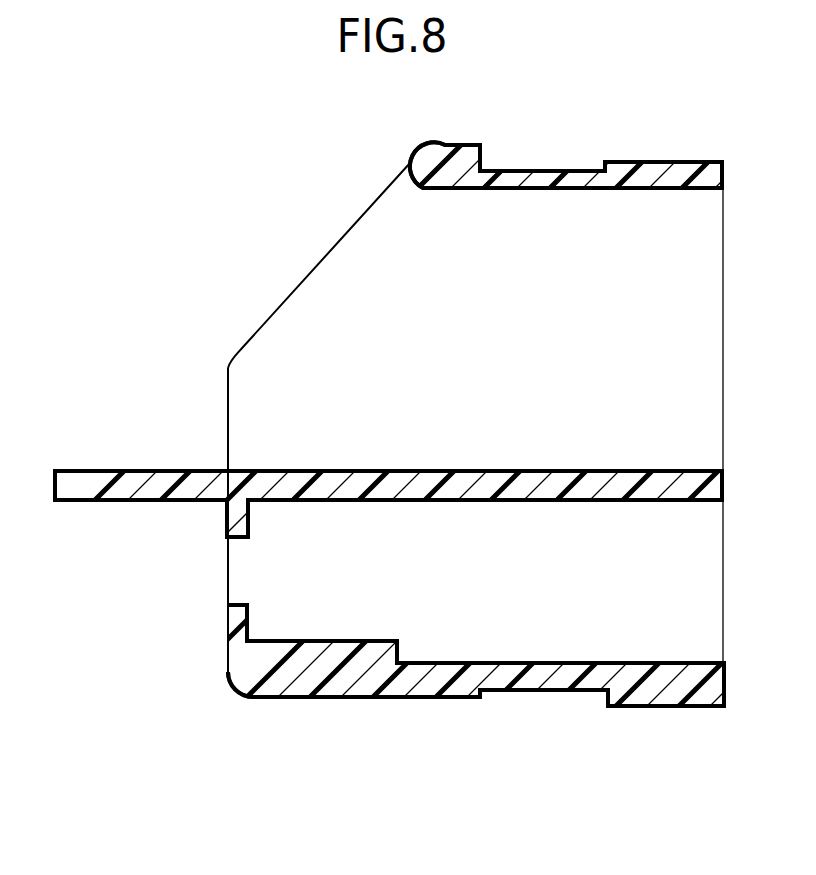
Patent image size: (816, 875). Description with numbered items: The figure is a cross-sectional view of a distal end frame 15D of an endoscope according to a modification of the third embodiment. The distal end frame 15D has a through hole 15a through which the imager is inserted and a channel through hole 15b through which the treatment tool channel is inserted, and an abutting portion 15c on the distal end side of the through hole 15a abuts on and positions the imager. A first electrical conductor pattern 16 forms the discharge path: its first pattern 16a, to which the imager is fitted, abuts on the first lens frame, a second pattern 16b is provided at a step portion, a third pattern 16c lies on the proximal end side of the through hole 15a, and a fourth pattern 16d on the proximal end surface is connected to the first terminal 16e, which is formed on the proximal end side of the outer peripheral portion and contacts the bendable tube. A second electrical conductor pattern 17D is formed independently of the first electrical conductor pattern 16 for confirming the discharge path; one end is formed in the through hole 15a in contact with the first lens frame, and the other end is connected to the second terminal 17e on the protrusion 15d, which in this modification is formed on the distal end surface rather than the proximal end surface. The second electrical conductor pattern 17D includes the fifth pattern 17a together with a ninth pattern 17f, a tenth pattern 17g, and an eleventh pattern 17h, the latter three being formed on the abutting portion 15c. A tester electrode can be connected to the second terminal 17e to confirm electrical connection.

The channel through hole 15b is at (420, 182).
The distal end frame 15D is at (350, 226).
The protrusion 15d is at (85, 470).
The second terminal 17e is at (80, 500).
The second electrical conductor pattern 17D is at (55, 291).
The eleventh pattern 17h is at (237, 540).
The tenth pattern 17g is at (226, 518).
The ninth pattern 17f is at (248, 518).
The fifth pattern 17a is at (280, 480).
The first electrical conductor pattern 16 is at (318, 785).
The through hole 15a is at (233, 603).
The abutting portion 15c is at (243, 684).
The first pattern 16a is at (348, 641).
The second pattern 16b is at (418, 652).
The third pattern 16c is at (562, 663).
The fourth pattern 16d is at (707, 693).
The first terminal 16e is at (724, 670).